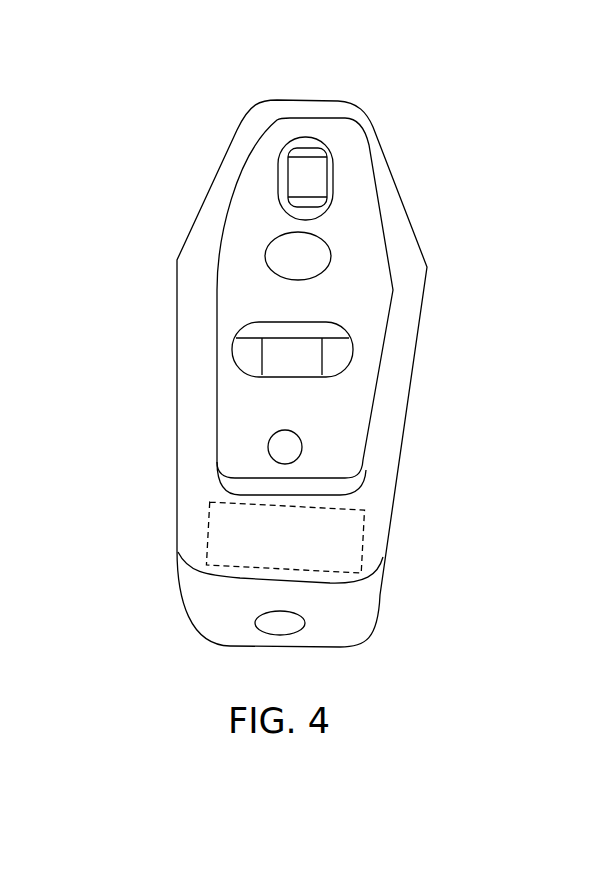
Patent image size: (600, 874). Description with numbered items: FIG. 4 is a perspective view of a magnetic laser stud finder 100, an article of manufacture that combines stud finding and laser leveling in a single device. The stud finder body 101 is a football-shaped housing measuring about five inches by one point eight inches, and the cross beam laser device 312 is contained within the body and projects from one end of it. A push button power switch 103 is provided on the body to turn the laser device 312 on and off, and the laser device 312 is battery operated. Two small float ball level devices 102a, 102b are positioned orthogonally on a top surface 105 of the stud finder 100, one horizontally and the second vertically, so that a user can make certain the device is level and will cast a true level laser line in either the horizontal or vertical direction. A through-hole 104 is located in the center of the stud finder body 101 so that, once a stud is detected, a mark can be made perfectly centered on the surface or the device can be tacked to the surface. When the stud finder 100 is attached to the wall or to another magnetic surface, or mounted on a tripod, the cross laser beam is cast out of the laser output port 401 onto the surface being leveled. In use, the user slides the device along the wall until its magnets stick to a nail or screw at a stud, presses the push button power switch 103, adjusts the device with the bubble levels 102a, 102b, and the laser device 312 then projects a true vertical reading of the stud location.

The magnetic laser stud finder 100 is at (283, 62).
The stud finder body 101 is at (342, 100).
The float ball level device 102a is at (272, 348).
The float ball level device 102b is at (332, 177).
The push button power switch 103 is at (268, 437).
The through-hole 104 is at (325, 243).
The top surface 105 is at (247, 208).
The cross beam laser device 312 is at (208, 552).
The laser output port 401 is at (302, 628).